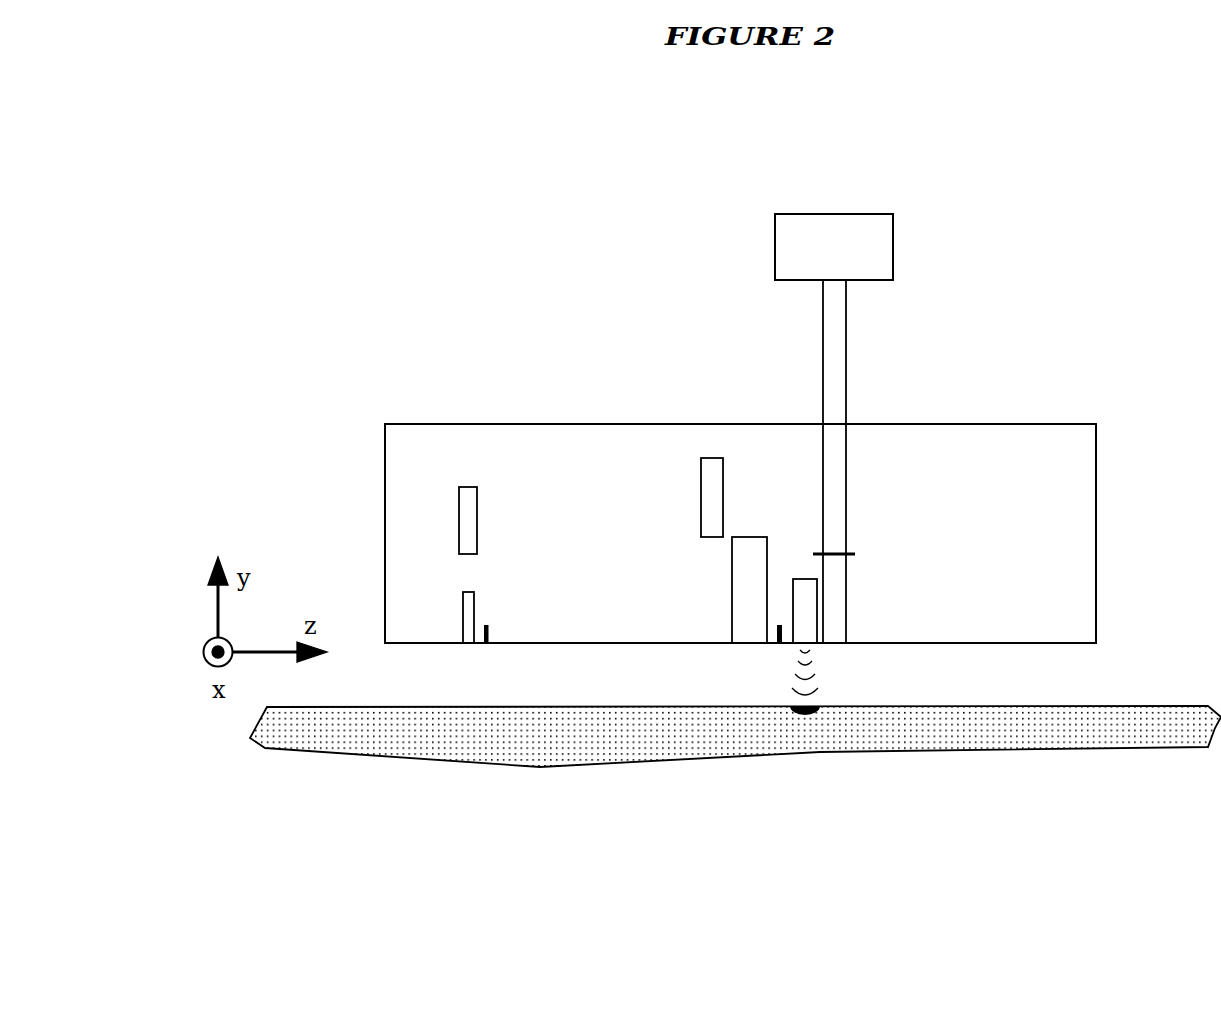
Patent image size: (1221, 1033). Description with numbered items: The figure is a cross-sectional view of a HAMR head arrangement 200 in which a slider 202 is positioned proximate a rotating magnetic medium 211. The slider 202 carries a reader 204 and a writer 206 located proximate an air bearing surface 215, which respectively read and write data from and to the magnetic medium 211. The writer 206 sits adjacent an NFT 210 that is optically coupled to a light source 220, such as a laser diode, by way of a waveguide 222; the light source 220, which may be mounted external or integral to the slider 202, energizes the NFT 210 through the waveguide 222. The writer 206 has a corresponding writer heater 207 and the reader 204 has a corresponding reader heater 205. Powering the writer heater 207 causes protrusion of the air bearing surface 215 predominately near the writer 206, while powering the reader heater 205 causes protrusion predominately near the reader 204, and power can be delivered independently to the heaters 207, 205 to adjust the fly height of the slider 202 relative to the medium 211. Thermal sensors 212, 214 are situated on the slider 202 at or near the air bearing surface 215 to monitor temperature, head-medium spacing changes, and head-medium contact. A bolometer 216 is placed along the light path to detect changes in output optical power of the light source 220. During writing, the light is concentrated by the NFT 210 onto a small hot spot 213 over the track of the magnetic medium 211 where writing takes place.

The HAMR head arrangement 200 is at (470, 255).
The slider 202 is at (1128, 396).
The reader 204 is at (463, 608).
The reader heater 205 is at (478, 521).
The writer 206 is at (732, 601).
The writer heater 207 is at (701, 504).
The NFT 210 is at (805, 578).
The magnetic medium 211 is at (1156, 704).
The thermal sensor 212 is at (778, 646).
The hot spot 213 is at (805, 712).
The thermal sensor 214 is at (486, 645).
The air bearing surface 215 is at (978, 648).
The bolometer 216 is at (850, 550).
The light source 220 is at (894, 240).
The waveguide 222 is at (847, 357).